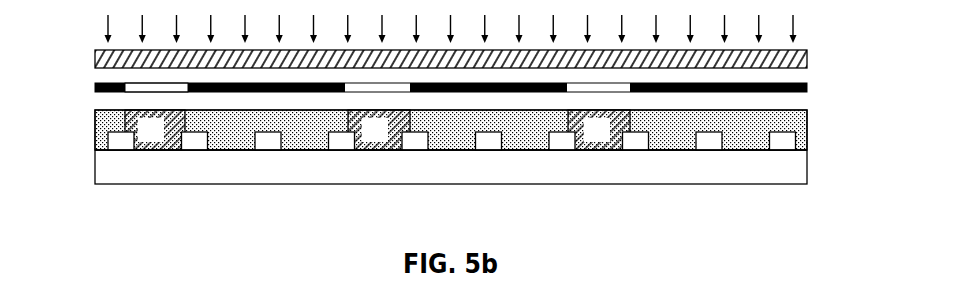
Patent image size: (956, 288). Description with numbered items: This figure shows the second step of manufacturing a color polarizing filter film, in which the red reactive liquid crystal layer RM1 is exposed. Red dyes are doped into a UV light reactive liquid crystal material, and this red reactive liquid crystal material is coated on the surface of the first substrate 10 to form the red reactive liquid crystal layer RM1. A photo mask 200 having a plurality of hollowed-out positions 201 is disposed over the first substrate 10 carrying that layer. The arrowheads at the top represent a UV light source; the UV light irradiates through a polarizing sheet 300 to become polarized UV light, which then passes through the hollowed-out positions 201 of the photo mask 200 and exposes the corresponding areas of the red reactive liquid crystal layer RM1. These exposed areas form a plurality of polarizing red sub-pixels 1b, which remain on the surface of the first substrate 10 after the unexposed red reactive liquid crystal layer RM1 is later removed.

The polarizing sheet 300 is at (800, 63).
The photo mask 200 is at (810, 90).
The hollowed-out positions 201 is at (139, 89).
The first substrate 10 is at (645, 163).
The red reactive liquid crystal layer RM1 is at (226, 118).
The polarizing red sub-pixels 1b is at (157, 143).